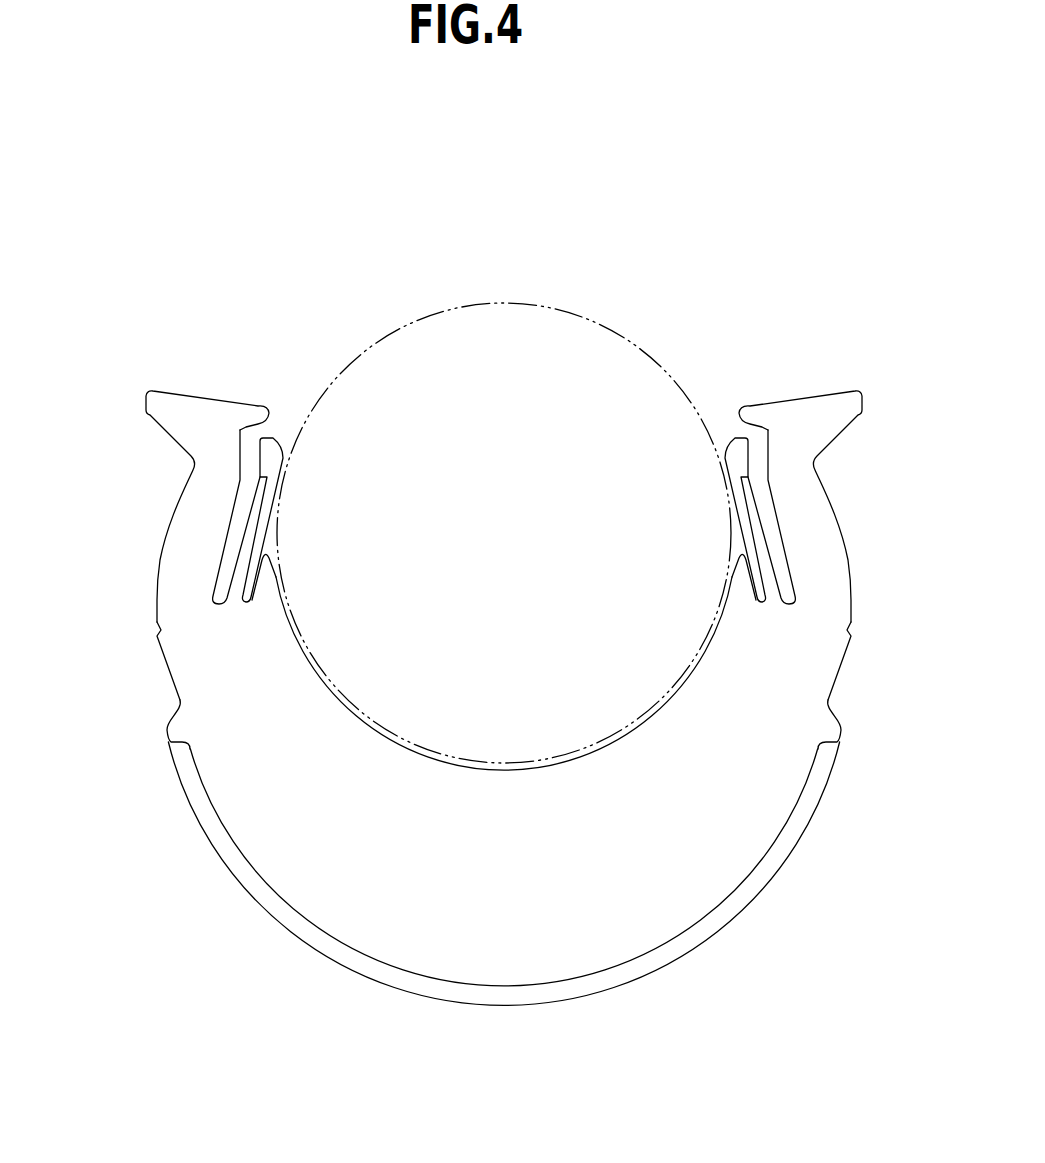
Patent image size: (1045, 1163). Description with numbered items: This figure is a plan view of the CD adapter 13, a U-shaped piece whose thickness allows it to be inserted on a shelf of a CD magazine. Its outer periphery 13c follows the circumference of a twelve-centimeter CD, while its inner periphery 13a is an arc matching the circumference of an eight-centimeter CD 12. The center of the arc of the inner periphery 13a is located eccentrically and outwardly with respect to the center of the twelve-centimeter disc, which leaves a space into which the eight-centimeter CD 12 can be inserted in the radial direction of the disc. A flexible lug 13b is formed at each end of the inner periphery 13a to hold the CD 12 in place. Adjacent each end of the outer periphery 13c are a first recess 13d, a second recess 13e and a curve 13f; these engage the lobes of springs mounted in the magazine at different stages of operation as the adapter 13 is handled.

The 8 cm CD 12 is at (504, 303).
The CD adapter 13 is at (499, 679).
The inner periphery 13a is at (534, 772).
The flexible lug 13b is at (268, 455).
The outer periphery 13c is at (505, 1005).
The first recess 13d is at (170, 717).
The second recess 13e is at (160, 630).
The curve 13f is at (163, 537).